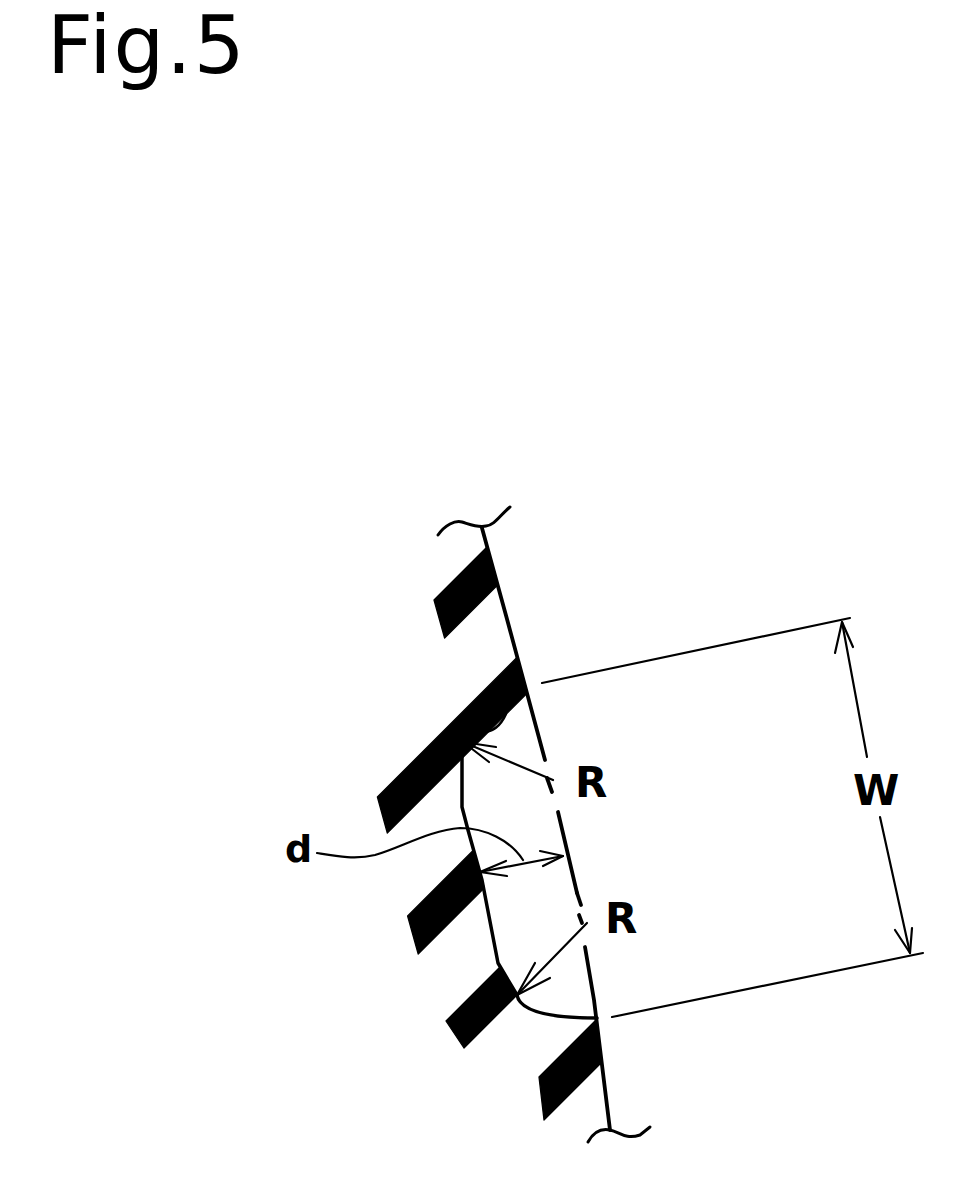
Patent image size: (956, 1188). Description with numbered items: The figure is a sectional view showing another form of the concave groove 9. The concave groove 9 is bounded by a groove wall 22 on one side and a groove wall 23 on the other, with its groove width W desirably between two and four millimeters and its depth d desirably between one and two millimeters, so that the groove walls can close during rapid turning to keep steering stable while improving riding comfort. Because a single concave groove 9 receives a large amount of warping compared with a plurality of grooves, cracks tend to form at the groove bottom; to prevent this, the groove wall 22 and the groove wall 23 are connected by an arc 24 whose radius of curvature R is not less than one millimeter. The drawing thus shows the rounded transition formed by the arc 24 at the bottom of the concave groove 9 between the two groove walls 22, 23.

The concave groove 9 is at (530, 830).
The groove wall 22 is at (533, 717).
The groove wall 23 is at (482, 912).
The arc 24 is at (502, 692).